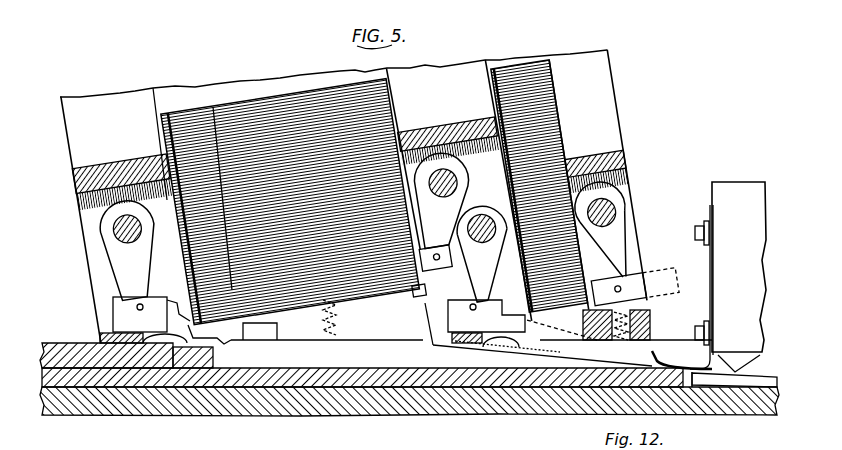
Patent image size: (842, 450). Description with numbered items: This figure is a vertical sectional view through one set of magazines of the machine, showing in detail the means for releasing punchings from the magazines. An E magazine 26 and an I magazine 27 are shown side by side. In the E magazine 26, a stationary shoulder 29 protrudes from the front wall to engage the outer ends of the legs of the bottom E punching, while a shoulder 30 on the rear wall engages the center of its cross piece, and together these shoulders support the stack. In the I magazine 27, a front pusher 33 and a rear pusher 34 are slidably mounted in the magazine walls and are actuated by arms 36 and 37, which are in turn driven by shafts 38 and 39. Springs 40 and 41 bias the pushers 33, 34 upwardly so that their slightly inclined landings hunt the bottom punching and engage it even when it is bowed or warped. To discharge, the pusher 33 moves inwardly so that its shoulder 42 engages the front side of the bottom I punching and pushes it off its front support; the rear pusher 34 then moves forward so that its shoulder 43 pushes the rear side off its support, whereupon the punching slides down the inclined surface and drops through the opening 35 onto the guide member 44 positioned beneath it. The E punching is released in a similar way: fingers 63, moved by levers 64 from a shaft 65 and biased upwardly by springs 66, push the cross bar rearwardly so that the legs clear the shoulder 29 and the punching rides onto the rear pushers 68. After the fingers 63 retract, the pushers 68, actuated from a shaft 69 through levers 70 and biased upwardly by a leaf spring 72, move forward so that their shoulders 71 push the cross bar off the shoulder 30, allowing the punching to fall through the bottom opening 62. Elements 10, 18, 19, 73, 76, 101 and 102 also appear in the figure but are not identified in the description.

The printing unit assembly 10 is at (62, 287).
The plate cylinder 18 is at (322, 88).
The blanket cylinder 19 is at (533, 63).
The E magazine 26 is at (258, 95).
The I magazine 27 is at (508, 62).
The stationary shoulder 29 is at (418, 297).
The shoulder 30 is at (213, 341).
The movable finger or pusher 33 is at (632, 283).
The movable finger or pusher 34 is at (462, 334).
The opening 35 is at (552, 358).
The arm 36 is at (618, 243).
The arm 37 is at (478, 272).
The shaft 38 is at (614, 211).
The shaft 39 is at (484, 215).
The spring 40 is at (642, 330).
The spring 41 is at (506, 345).
The shoulder 42 is at (578, 314).
The shoulder 43 is at (516, 316).
The guide member 44 is at (649, 366).
The bottom opening 62 is at (356, 336).
The slidable finger or pusher 63 is at (440, 265).
The lever 64 is at (465, 186).
The shaft 65 is at (443, 170).
The spring 66 is at (341, 320).
The rear finger or pusher 68 is at (128, 311).
The shaft 69 is at (112, 229).
The lever 70 is at (110, 263).
The shoulder 71 is at (162, 298).
The leaf spring 72 is at (173, 350).
The base 73 is at (302, 358).
The base corner 76 is at (42, 352).
The bracket 101 is at (696, 372).
The plate 102 is at (760, 373).